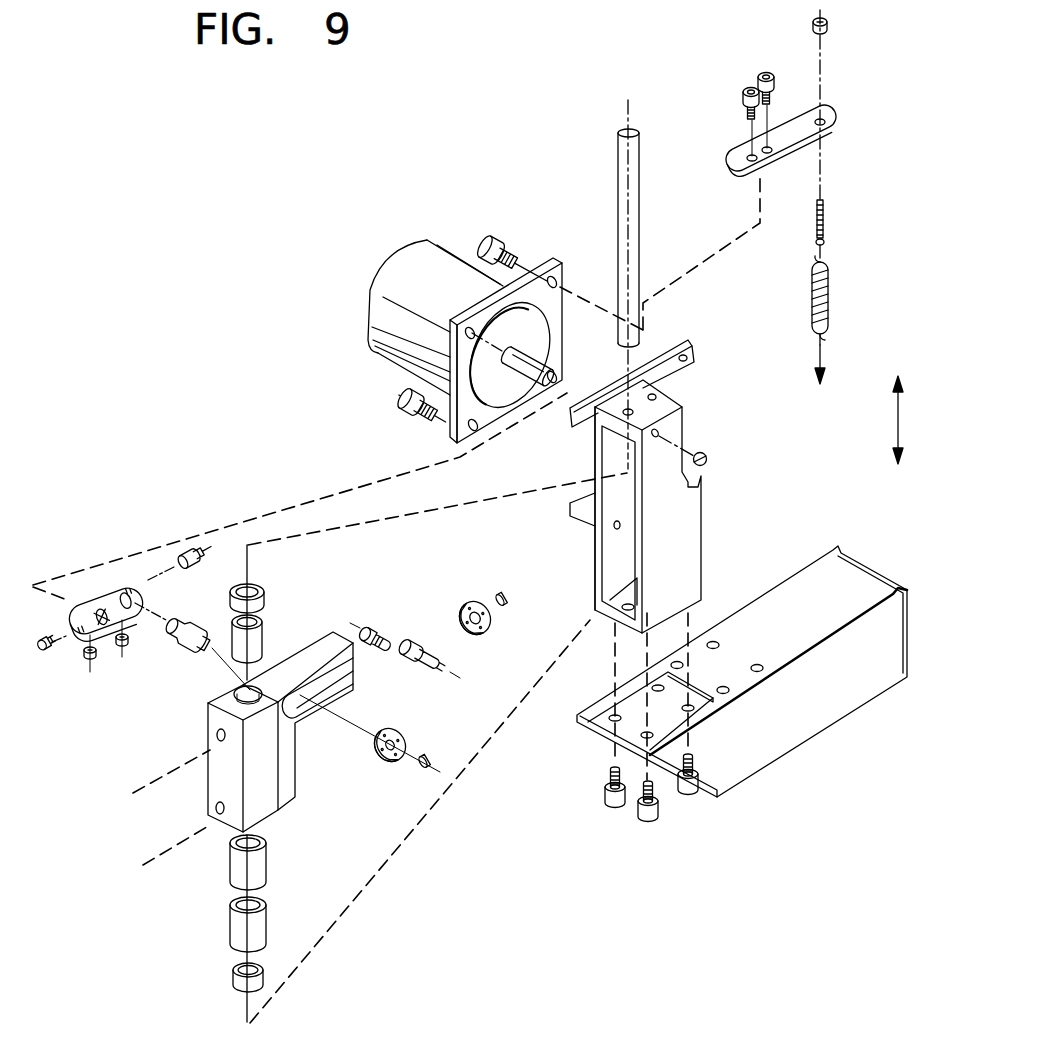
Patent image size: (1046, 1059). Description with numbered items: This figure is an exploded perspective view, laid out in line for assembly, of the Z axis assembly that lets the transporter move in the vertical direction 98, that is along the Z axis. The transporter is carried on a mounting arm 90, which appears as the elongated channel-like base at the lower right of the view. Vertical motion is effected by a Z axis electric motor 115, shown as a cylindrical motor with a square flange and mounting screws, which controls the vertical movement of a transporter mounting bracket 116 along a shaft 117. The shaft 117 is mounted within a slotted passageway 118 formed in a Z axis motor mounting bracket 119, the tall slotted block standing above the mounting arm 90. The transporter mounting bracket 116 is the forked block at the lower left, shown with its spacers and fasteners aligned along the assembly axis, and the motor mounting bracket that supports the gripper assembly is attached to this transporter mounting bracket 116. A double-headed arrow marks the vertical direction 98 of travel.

The Z axis electric motor 115 is at (452, 250).
The shaft 117 is at (639, 179).
The slotted passageway 118 is at (607, 555).
The Z axis motor mounting bracket 119 is at (667, 523).
The transporter mounting bracket 116 is at (263, 793).
The mounting arm 90 is at (773, 738).
The vertical direction 98 is at (896, 431).